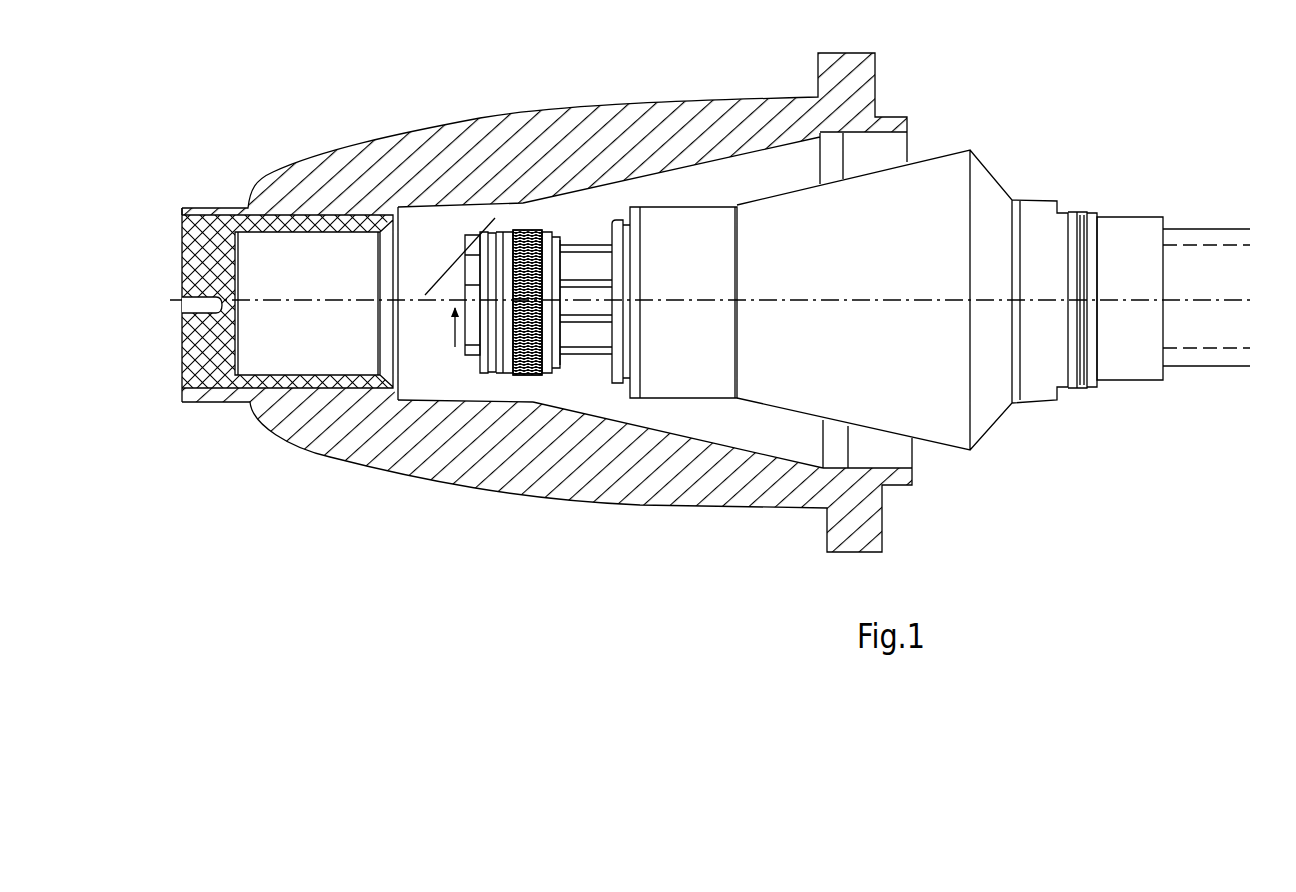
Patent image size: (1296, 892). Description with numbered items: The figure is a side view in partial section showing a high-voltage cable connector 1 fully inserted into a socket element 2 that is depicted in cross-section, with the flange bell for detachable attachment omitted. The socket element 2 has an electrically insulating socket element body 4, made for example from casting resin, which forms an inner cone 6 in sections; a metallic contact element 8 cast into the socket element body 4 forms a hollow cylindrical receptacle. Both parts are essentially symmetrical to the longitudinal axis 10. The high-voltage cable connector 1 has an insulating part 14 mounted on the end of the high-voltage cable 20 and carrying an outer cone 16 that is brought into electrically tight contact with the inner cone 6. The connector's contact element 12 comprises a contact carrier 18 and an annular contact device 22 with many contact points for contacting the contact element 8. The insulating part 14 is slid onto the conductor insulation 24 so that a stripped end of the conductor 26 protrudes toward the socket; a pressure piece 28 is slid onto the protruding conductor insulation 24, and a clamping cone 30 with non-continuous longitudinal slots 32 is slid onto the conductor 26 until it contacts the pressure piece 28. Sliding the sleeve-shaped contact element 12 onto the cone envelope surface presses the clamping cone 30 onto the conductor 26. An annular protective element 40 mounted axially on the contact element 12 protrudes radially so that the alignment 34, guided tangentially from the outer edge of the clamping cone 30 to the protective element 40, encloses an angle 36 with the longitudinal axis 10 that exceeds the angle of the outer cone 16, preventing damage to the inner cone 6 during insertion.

The high-voltage cable connector 1 is at (1028, 473).
The socket element 2 is at (243, 467).
The socket element body 4 is at (680, 477).
The inner cone 6 is at (735, 436).
The contact element 8 is at (203, 350).
The longitudinal axis 10 is at (1147, 300).
The contact element 12 is at (483, 367).
The insulating part 14 is at (957, 447).
The outer cone 16 is at (953, 402).
The contact carrier 18 is at (547, 367).
The high-voltage cable 20 is at (1168, 190).
The contact device 22 is at (528, 375).
The conductor insulation 24 is at (1223, 237).
The conductor 26 is at (1197, 273).
The pressure piece 28 is at (683, 248).
The clamping cone 30 is at (593, 267).
The longitudinal slot 32 is at (573, 283).
The alignment 34 is at (452, 262).
The angle 36 is at (431, 270).
The protective element 40 is at (500, 385).